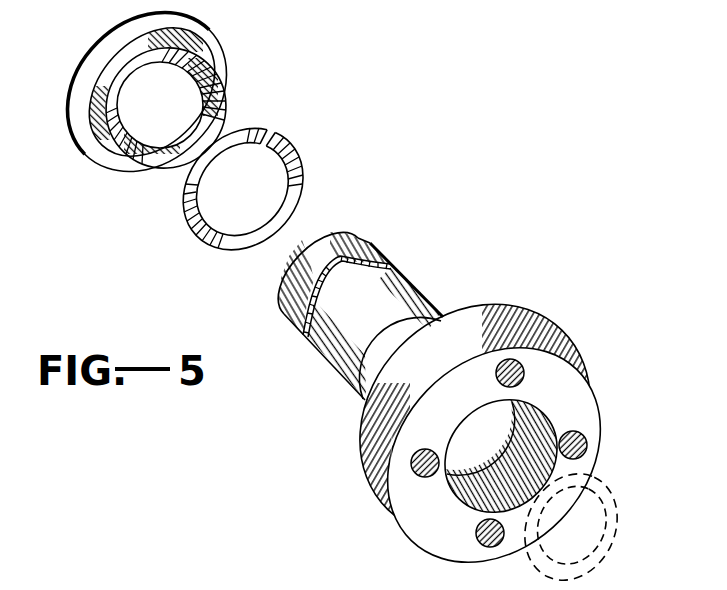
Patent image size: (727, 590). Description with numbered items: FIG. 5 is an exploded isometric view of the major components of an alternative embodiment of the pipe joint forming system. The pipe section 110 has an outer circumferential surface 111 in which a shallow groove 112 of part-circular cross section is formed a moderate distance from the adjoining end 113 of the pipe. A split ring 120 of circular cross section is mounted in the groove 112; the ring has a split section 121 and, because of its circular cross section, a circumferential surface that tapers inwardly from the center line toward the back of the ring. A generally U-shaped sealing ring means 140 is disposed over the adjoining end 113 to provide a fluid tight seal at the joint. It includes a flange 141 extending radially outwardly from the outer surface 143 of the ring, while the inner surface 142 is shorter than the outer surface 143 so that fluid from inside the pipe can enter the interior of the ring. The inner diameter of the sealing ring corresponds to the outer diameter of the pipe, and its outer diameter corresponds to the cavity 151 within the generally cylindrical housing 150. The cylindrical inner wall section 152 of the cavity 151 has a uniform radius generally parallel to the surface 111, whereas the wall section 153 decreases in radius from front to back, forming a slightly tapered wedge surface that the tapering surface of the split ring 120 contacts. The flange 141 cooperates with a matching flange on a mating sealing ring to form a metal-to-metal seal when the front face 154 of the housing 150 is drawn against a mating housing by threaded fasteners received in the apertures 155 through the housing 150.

The pipe section 110 is at (436, 300).
The outer circumferential surface 111 is at (380, 298).
The groove 112 is at (365, 245).
The adjoining end 113 is at (279, 289).
The split ring 120 is at (304, 168).
The split section 121 is at (278, 138).
The sealing ring means 140 is at (215, 295).
The flange 141 is at (205, 32).
The inner surface 142 is at (182, 130).
The outer surface 143 is at (133, 55).
The housing 150 is at (617, 329).
The cavity 151 is at (522, 445).
The cylindrical inner wall section 152 is at (518, 430).
The tapered wedge surface 153 is at (532, 473).
The front face 154 is at (357, 447).
The apertures 155 is at (477, 533).